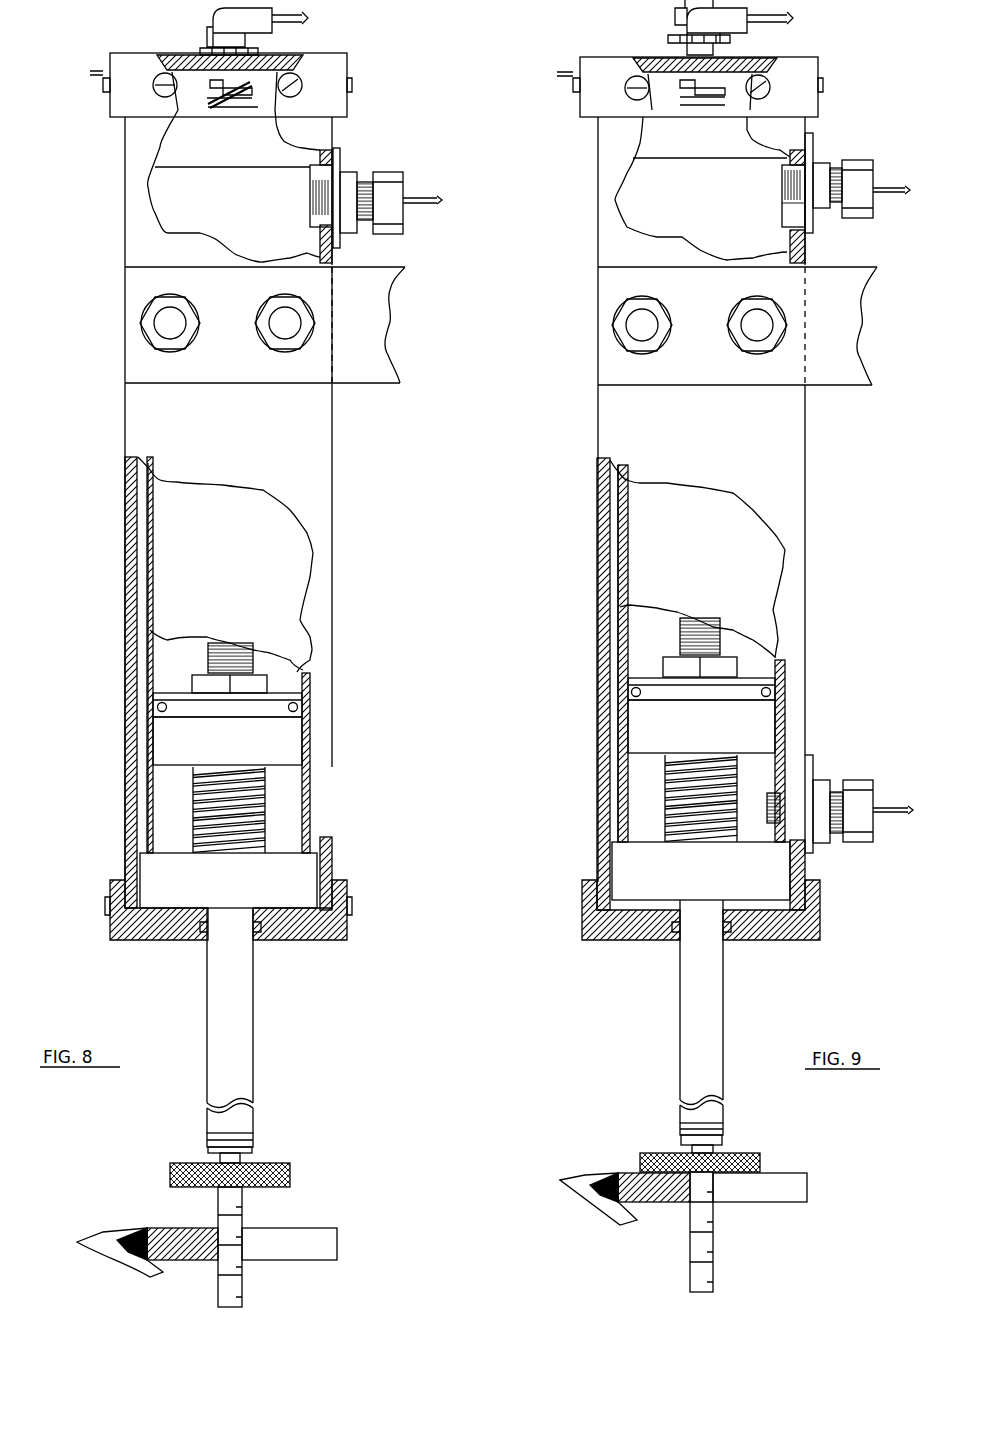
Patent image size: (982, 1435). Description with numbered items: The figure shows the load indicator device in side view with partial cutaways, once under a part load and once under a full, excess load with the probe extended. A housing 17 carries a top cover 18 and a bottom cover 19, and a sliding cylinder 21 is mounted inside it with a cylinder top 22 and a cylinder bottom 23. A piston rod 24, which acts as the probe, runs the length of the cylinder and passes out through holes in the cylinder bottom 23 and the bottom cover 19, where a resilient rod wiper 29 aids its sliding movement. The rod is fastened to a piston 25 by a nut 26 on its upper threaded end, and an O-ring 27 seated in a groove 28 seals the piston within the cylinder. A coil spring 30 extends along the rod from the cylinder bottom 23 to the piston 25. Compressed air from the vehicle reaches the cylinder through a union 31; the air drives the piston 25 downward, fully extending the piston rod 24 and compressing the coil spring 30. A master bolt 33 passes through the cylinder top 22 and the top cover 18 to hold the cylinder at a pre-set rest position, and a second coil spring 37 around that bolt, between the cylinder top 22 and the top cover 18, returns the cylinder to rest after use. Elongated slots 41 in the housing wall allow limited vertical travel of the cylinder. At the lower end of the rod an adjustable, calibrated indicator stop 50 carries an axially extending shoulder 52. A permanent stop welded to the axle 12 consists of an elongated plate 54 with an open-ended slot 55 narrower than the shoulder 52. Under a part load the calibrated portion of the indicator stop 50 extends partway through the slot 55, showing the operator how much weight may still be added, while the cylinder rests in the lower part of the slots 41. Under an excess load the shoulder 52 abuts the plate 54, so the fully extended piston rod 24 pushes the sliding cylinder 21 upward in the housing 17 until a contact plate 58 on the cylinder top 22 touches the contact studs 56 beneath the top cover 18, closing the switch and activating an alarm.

In FIG. 8, the axle 12 is at (100, 1242).
In FIG. 9, the axle 12 is at (572, 1180).
In FIG. 8, the housing 17 is at (160, 402).
In FIG. 9, the housing 17 is at (632, 412).
In FIG. 8, the top cover 18 is at (120, 60).
In FIG. 9, the top cover 18 is at (608, 63).
In FIG. 8, the bottom cover 19 is at (132, 928).
In FIG. 9, the bottom cover 19 is at (608, 930).
In FIG. 8, the sliding cylinder 21 is at (185, 533).
In FIG. 9, the sliding cylinder 21 is at (655, 525).
In FIG. 8, the cylinder top 22 is at (197, 143).
In FIG. 9, the cylinder top 22 is at (673, 142).
In FIG. 8, the cylinder bottom 23 is at (167, 873).
In FIG. 9, the cylinder bottom 23 is at (662, 867).
In FIG. 8, the piston rod 24 is at (222, 1087).
In FIG. 9, the piston rod 24 is at (697, 1037).
In FIG. 8, the piston 25 is at (175, 735).
In FIG. 9, the piston 25 is at (662, 728).
In FIG. 8, the nut 26 is at (217, 683).
In FIG. 9, the nut 26 is at (700, 647).
In FIG. 8, the O-ring 27 is at (148, 703).
In FIG. 9, the O-ring 27 is at (628, 692).
In FIG. 8, the groove 28 is at (292, 698).
In FIG. 9, the groove 28 is at (770, 683).
In FIG. 8, the rod wiper 29 is at (200, 933).
In FIG. 9, the rod wiper 29 is at (663, 935).
In FIG. 8, the coil spring 30 is at (197, 791).
In FIG. 9, the coil spring 30 is at (665, 787).
In FIG. 8, the union 31 is at (395, 225).
In FIG. 9, the union 31 is at (855, 833).
In FIG. 8, the master bolt 33 is at (213, 82).
In FIG. 9, the master bolt 33 is at (685, 5).
In FIG. 8, the coil spring 37 is at (247, 88).
In FIG. 8, the elongated slots 41 is at (325, 175).
In FIG. 9, the elongated slots 41 is at (795, 215).
In FIG. 8, the indicator stop 50 is at (242, 1207).
In FIG. 9, the indicator stop 50 is at (713, 1253).
In FIG. 8, the shoulder 52 is at (288, 1175).
In FIG. 9, the shoulder 52 is at (757, 1162).
In FIG. 8, the elongated plate 54 is at (173, 1243).
In FIG. 9, the elongated plate 54 is at (643, 1197).
In FIG. 8, the open-ended slot 55 is at (322, 1255).
In FIG. 9, the open-ended slot 55 is at (790, 1195).
In FIG. 8, the contact studs 56 is at (247, 80).
In FIG. 9, the contact studs 56 is at (687, 90).
In FIG. 8, the contact plate 58 is at (267, 107).
In FIG. 9, the contact plate 58 is at (720, 100).